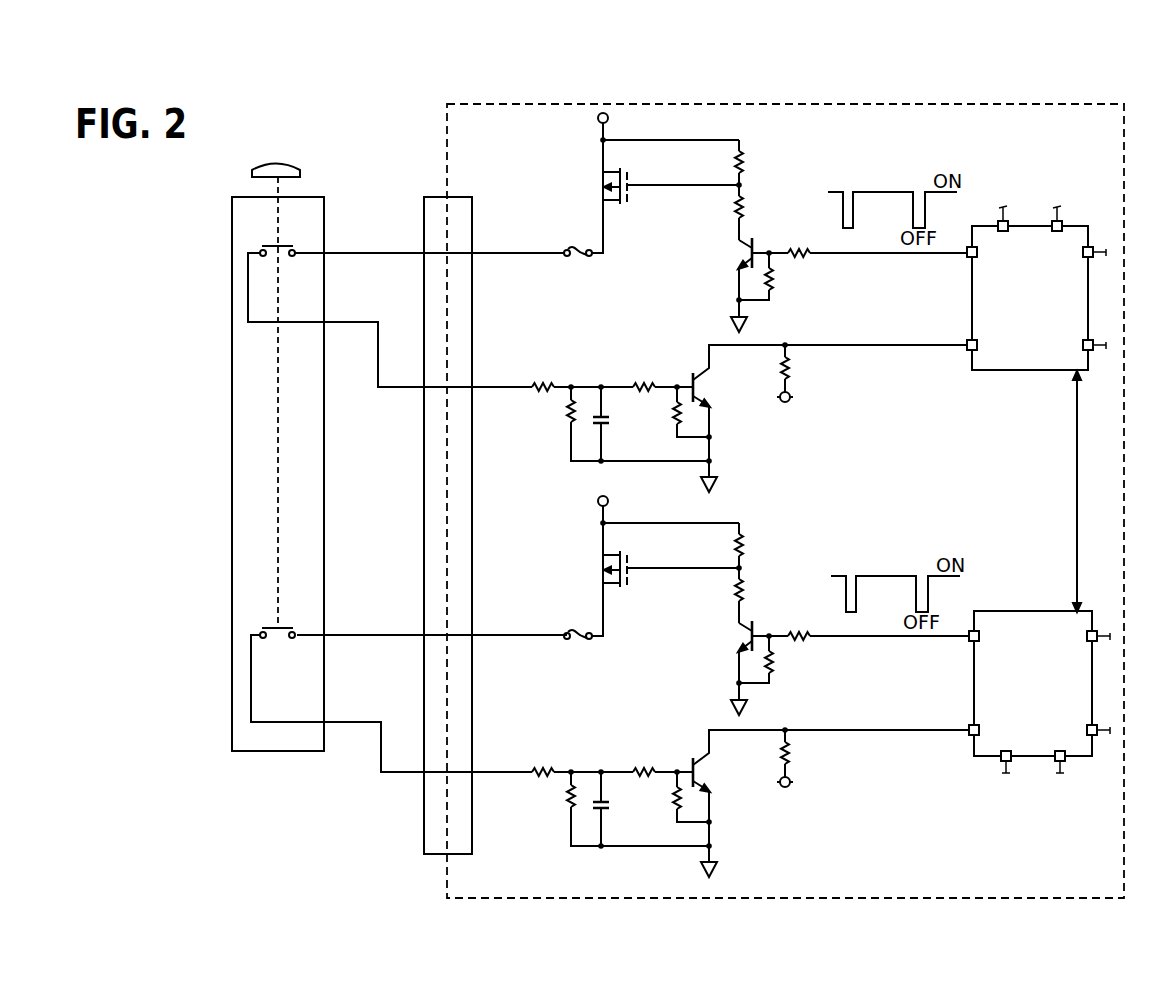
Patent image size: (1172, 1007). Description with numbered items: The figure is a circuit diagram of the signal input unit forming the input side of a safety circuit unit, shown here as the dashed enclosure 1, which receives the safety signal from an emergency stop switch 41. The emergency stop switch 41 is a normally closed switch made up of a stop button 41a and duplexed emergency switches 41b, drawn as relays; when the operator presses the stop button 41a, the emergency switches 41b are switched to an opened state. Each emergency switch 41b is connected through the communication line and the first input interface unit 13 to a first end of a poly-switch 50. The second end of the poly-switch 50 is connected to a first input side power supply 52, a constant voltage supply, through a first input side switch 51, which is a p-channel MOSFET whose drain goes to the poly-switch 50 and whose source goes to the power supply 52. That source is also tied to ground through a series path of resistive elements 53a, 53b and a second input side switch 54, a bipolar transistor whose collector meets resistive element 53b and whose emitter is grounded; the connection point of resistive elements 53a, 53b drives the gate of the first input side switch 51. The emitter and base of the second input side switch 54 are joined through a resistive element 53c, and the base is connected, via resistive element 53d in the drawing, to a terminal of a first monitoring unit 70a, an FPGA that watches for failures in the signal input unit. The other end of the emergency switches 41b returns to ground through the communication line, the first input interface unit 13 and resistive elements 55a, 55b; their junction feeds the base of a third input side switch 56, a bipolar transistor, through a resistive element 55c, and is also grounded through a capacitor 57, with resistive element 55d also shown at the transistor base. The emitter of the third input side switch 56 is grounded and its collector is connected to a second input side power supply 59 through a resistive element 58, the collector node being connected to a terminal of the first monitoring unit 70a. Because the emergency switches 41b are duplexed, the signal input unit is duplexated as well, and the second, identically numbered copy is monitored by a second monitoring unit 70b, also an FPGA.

The control device 1 is at (1126, 157).
The first input interface unit 13 is at (435, 197).
The emergency stop switch 41 is at (190, 219).
The stop button 41a is at (262, 160).
The emergency switches 41b is at (302, 238).
The poly-switch 50 is at (567, 249).
The first input side switch 51 is at (605, 178).
The first input side power supply 52 is at (598, 118).
The resistive element 53a is at (744, 162).
The resistive element 53b is at (744, 206).
The resistive element 53c is at (774, 285).
The resistor 53d is at (803, 250).
The second input side switch 54 is at (744, 249).
The resistive element 55a is at (554, 383).
The resistive element 55b is at (566, 417).
The resistive element 55c is at (657, 383).
The resistor 55d is at (672, 417).
The third input side switch 56 is at (707, 380).
The capacitor 57 is at (604, 427).
The resistive element 58 is at (789, 377).
The second input side power supply 59 is at (789, 402).
The first monitoring unit 70a is at (1002, 372).
The second monitoring unit 70b is at (1004, 610).